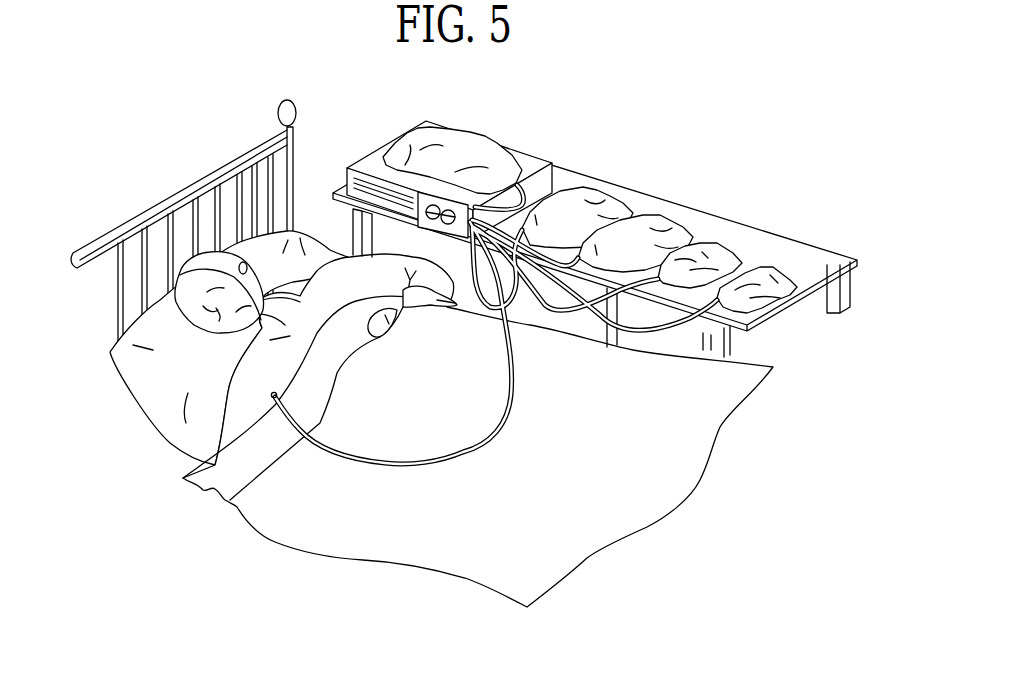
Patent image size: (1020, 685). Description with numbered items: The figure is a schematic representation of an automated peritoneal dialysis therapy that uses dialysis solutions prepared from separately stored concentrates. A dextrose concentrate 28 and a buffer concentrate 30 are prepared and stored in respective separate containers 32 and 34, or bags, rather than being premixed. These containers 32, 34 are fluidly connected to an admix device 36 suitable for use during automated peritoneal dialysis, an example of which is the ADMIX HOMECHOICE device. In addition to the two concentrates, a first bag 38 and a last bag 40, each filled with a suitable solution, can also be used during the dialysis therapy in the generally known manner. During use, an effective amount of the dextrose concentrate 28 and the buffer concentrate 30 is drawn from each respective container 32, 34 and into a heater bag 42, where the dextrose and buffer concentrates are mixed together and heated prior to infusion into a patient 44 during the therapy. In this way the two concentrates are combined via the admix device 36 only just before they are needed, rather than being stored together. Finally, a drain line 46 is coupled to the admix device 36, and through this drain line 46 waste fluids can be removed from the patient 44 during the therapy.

The dextrose concentrate 28 is at (577, 231).
The buffer concentrate 30 is at (634, 256).
The container 32 is at (590, 183).
The container 34 is at (655, 201).
The admix device 36 is at (530, 162).
The first bag 38 is at (725, 252).
The last bag 40 is at (770, 294).
The heater bag 42 is at (477, 152).
The patient 44 is at (230, 408).
The drain line 46 is at (612, 316).